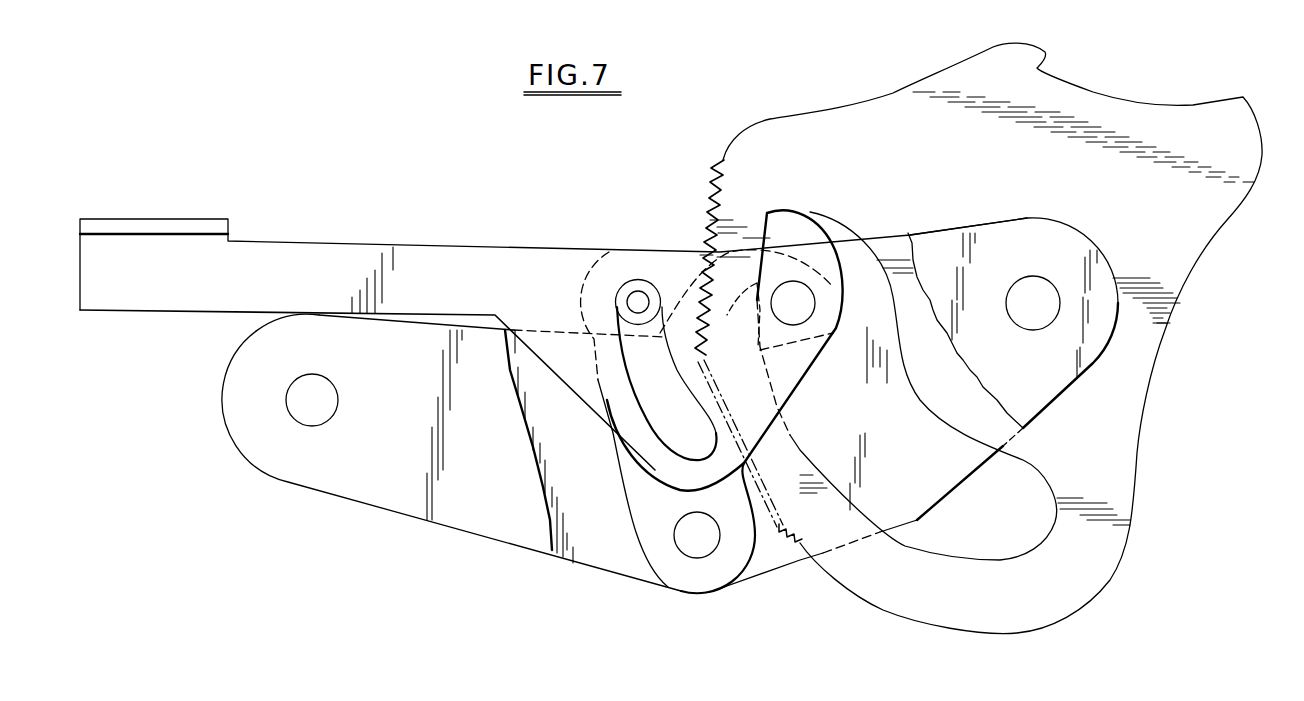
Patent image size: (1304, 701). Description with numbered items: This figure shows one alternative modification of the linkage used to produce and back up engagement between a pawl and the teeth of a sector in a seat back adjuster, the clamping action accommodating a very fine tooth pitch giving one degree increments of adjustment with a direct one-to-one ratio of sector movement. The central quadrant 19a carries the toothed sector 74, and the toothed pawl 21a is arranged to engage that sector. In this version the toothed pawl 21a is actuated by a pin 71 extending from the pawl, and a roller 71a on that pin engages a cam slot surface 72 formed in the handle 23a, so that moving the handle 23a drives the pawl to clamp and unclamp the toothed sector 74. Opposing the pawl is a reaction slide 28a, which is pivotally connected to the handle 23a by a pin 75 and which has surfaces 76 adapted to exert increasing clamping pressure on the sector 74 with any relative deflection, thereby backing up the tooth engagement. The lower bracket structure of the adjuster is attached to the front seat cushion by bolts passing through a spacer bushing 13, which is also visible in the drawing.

The central quadrant 19a is at (1117, 533).
The handle 23a is at (550, 258).
The toothed pawl 21a is at (643, 525).
The pin 71 is at (639, 298).
The roller 71a is at (633, 290).
The spacer bushing 13 is at (680, 390).
The cam slot surface 72 is at (645, 407).
The reaction slide 28a is at (810, 270).
The pin 75 is at (800, 307).
The surfaces 76 is at (757, 332).
The toothed sector 74 is at (873, 243).